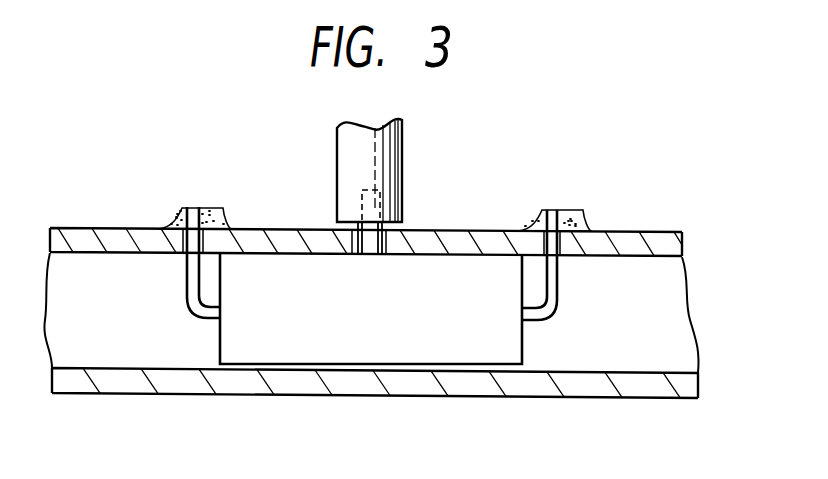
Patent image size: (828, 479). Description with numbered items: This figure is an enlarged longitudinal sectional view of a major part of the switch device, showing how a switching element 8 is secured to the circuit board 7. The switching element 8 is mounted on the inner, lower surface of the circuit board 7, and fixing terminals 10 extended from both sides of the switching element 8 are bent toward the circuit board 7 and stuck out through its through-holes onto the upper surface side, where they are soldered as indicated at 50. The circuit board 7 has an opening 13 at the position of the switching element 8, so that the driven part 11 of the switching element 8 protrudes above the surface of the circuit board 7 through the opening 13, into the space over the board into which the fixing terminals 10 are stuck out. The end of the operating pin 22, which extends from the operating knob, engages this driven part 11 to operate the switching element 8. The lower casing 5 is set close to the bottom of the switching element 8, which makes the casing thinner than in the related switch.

The lower casing 5 is at (410, 382).
The circuit board 7 is at (113, 241).
The switching element 8 is at (307, 350).
The fixing terminal 10 is at (192, 279).
The driven part 11 is at (372, 207).
The opening 13 is at (352, 240).
The operating pin 22 is at (388, 152).
The solder 50 is at (203, 208).